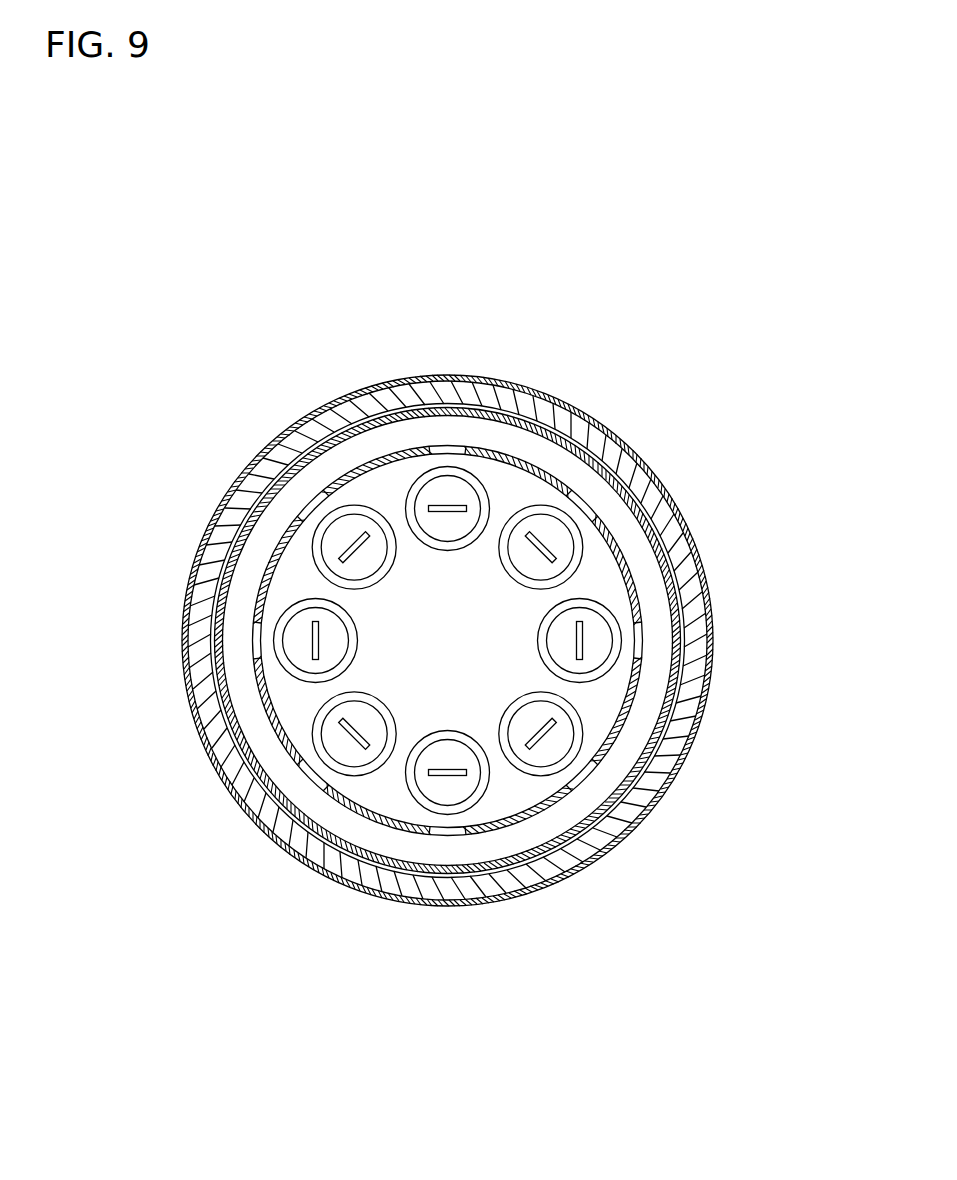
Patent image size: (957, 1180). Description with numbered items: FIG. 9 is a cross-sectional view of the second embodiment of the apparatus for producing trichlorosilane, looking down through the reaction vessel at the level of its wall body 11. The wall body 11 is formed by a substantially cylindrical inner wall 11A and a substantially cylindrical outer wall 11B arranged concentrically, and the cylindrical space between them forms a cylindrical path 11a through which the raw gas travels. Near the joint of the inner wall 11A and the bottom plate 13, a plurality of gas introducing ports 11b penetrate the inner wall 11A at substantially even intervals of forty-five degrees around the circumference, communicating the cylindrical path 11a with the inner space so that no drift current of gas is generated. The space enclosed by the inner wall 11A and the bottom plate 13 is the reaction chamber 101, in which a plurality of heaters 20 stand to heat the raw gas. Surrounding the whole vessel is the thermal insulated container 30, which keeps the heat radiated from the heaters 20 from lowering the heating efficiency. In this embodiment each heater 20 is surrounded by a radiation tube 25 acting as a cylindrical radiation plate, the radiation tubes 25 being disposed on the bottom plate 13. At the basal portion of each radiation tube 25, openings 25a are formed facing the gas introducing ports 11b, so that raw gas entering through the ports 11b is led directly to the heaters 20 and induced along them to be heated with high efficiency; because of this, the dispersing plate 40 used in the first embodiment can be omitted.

The reaction chamber 101 is at (494, 472).
The wall body 11 is at (360, 966).
The inner wall 11A is at (358, 810).
The outer wall 11B is at (385, 822).
The cylindrical path 11a is at (648, 551).
The gas introducing ports 11b is at (600, 503).
The bottom plate 13 is at (598, 791).
The heaters 20 is at (313, 616).
The radiation tube 25 is at (362, 505).
The openings 25a is at (548, 506).
The thermal insulated container 30 is at (250, 791).
The dispersing plate 40 is at (520, 796).